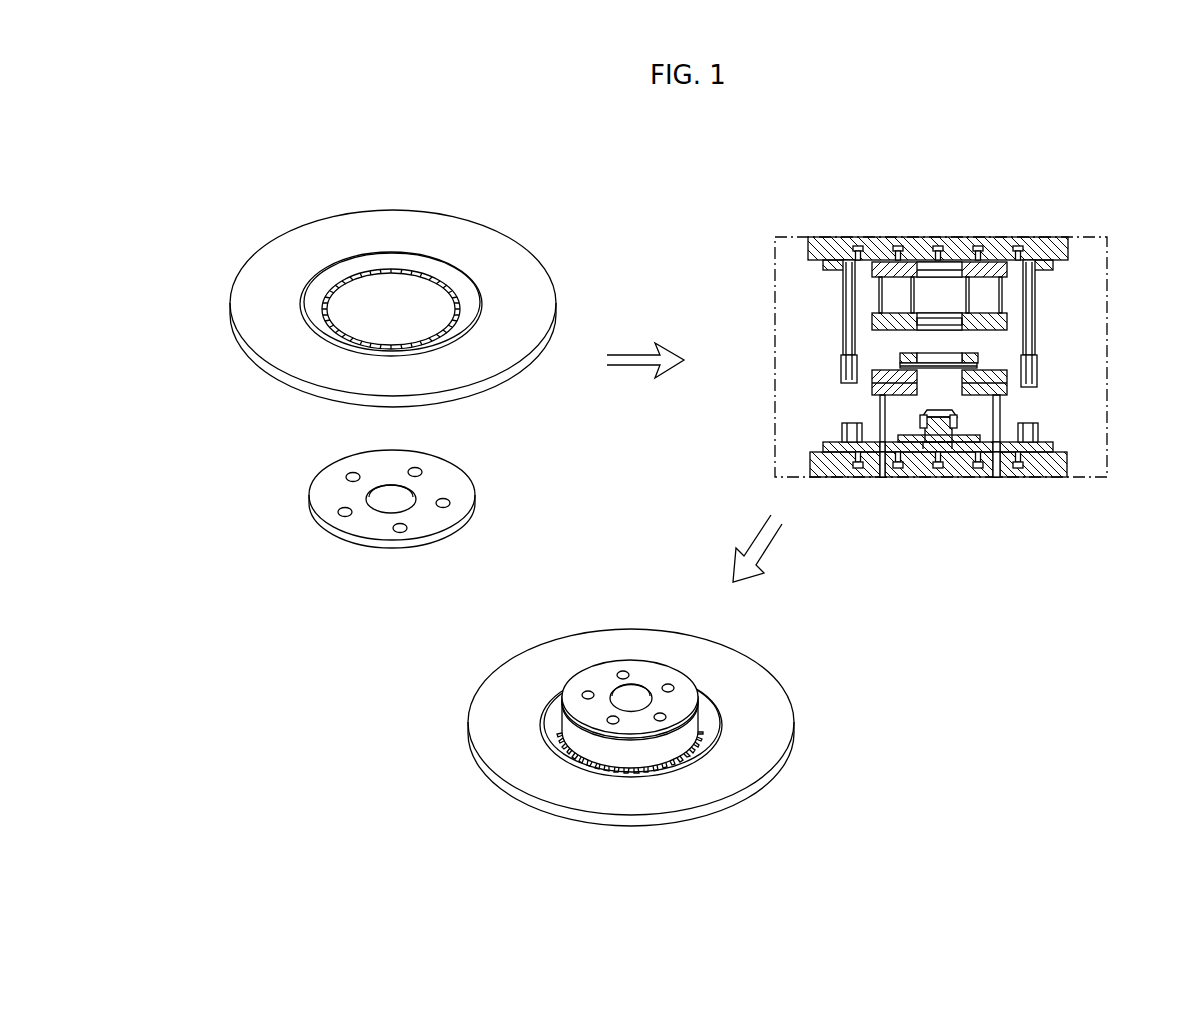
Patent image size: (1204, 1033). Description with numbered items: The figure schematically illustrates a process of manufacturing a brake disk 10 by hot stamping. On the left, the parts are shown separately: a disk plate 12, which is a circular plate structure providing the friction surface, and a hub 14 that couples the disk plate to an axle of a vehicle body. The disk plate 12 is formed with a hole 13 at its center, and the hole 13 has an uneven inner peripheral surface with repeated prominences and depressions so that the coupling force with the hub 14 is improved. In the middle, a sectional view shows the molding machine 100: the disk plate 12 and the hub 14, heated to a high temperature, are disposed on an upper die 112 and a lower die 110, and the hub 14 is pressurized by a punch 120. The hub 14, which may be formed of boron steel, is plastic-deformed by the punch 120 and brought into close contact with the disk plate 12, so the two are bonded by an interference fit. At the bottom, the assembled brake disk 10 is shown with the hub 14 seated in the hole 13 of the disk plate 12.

The brake disk 10 is at (204, 421).
The disk plate 12 is at (253, 268).
The hole 13 is at (367, 302).
The hub 14 is at (308, 507).
The molding machine 100 is at (808, 303).
The lower die 110 is at (1007, 373).
The upper die 112 is at (872, 322).
The punch 120 is at (930, 404).